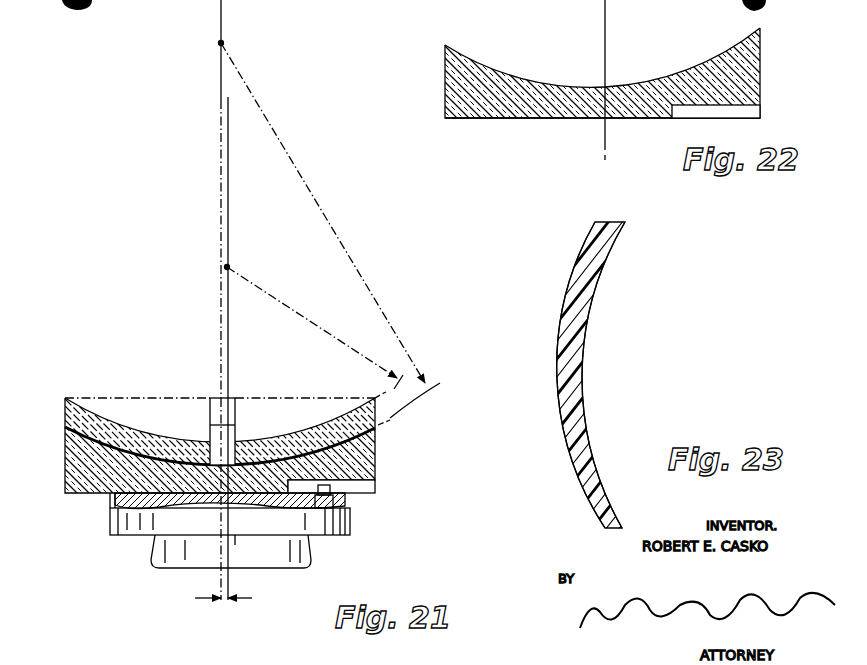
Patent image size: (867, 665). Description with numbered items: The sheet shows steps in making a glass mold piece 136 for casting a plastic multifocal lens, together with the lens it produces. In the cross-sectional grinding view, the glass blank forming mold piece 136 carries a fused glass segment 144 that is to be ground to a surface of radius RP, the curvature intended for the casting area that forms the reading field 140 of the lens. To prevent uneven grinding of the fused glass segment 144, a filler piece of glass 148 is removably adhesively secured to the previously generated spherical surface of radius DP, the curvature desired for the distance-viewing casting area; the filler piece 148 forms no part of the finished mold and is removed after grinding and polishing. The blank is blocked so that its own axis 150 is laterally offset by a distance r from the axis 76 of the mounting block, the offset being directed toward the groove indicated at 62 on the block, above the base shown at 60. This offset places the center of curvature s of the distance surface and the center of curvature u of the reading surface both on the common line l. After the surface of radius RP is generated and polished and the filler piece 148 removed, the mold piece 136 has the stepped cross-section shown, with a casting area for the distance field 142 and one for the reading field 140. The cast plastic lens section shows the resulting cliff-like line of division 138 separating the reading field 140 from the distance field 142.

In FIG. 21, the mold piece 136 is at (66, 452).
In FIG. 22, the mold piece 136 is at (445, 68).
In FIG. 21, the fused glass segment 144 is at (357, 410).
In FIG. 21, the filler piece of glass 148 is at (88, 425).
In FIG. 21, the axis 150 is at (219, 360).
In FIG. 21, the axis of block 76 is at (230, 118).
In FIG. 21, the base plate 60 is at (80, 494).
In FIG. 22, the base plate 60 is at (494, 120).
In FIG. 21, the mounting plate 62 is at (362, 490).
In FIG. 22, the mounting plate 62 is at (762, 112).
In FIG. 22, the distance field 142 is at (523, 78).
In FIG. 23, the distance field 142 is at (580, 262).
In FIG. 22, the reading field 140 is at (688, 68).
In FIG. 23, the reading field 140 is at (571, 457).
In FIG. 23, the cliff-like line of division 138 is at (558, 392).
In FIG. 21, the center of curvature s is at (224, 43).
In FIG. 21, the center of curvature u is at (224, 267).
In FIG. 21, the radius of curvature DP is at (293, 162).
In FIG. 21, the surface curvature radius RP is at (294, 310).
In FIG. 21, the offset distance r is at (222, 604).
In FIG. 21, the line l is at (220, 2).